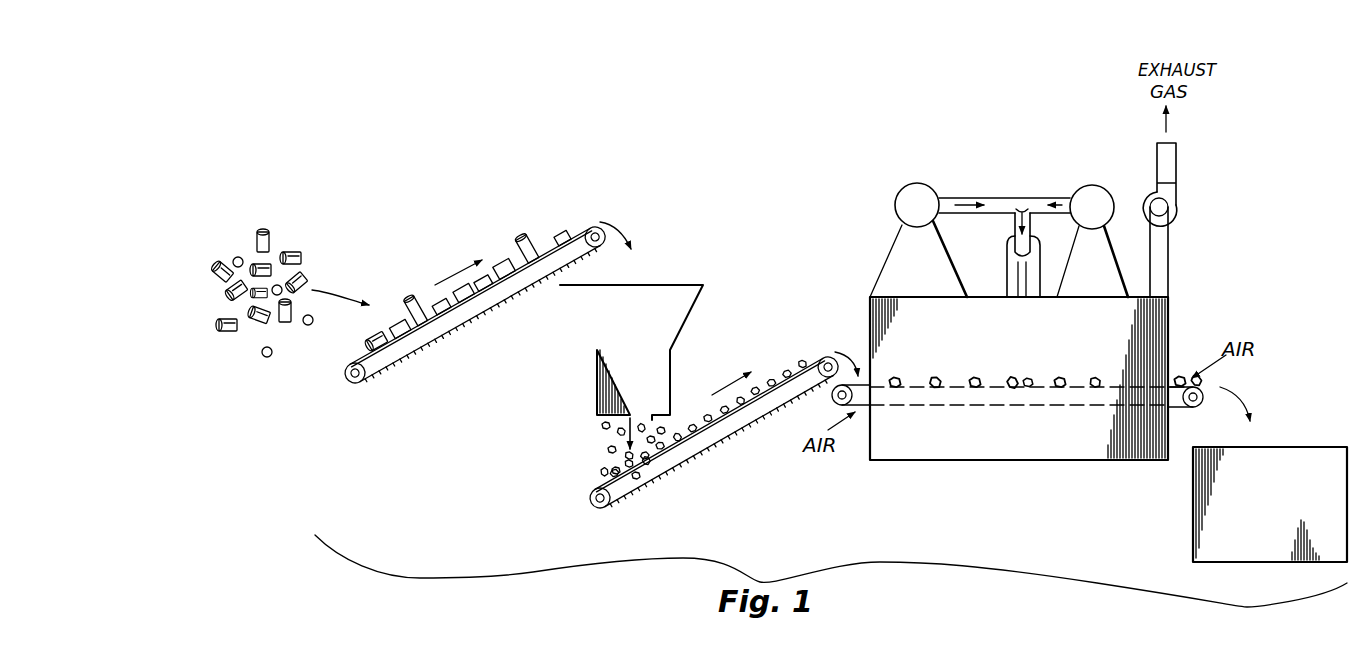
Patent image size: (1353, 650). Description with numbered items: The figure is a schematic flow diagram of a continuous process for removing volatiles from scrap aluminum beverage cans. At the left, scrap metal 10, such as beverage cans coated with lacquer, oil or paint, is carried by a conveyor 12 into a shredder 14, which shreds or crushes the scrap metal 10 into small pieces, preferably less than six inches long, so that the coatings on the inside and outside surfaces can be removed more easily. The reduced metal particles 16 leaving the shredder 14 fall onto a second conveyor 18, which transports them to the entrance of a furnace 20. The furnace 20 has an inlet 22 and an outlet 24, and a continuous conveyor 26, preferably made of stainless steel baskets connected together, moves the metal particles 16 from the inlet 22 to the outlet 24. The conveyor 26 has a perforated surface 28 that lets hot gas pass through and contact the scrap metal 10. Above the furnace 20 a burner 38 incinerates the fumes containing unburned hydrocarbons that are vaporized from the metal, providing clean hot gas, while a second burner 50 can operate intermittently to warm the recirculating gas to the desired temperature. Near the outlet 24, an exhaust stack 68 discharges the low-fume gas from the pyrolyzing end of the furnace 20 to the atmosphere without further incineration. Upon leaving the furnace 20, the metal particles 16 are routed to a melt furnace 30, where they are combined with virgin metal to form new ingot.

The scrap metal 10 is at (314, 239).
The conveyor 12 is at (398, 368).
The shredder 14 is at (643, 358).
The reduced metal particles 16 is at (672, 430).
The conveyor 18 is at (701, 456).
The furnace 20 is at (982, 465).
The inlet 22 is at (866, 384).
The outlet 24 is at (1172, 385).
The continuous conveyor 26 is at (1174, 407).
The perforated surface 28 is at (950, 383).
The melt furnace 30 is at (1193, 533).
The burner 38 is at (896, 203).
The second burner 50 is at (1094, 186).
The exhaust stack 68 is at (1170, 243).